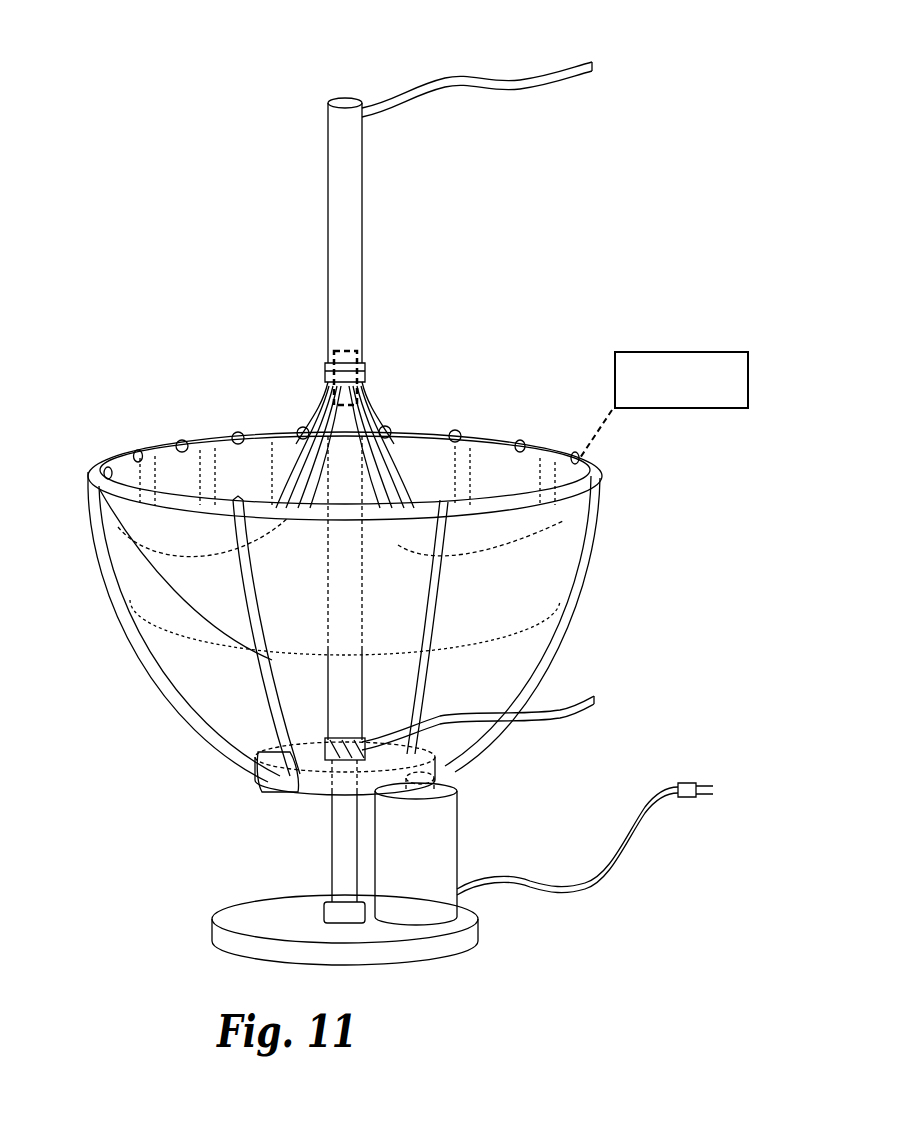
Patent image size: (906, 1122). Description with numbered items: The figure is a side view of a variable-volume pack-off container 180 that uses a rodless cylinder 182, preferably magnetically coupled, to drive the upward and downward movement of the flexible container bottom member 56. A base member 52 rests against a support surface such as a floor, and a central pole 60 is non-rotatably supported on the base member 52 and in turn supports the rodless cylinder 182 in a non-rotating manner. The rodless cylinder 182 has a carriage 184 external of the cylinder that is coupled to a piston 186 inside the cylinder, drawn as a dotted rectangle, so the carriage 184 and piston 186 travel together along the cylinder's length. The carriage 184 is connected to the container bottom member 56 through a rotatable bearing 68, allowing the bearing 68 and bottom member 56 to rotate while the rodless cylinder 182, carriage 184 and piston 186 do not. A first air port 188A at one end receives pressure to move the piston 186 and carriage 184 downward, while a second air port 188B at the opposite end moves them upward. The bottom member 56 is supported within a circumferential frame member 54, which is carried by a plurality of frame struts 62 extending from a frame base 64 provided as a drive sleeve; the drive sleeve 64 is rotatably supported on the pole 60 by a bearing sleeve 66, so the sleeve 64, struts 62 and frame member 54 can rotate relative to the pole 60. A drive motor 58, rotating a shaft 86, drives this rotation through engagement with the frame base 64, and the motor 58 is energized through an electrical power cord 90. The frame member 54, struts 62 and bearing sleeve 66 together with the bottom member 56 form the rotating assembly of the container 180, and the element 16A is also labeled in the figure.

The container 180 is at (178, 178).
The rodless cylinder 182 is at (362, 228).
The first air port 188A is at (390, 102).
The rotatable bearing 68 is at (336, 362).
The carriage 184 is at (366, 378).
The piston 186 is at (330, 378).
The container bottom member 56 is at (380, 478).
The basket rim 16A is at (188, 468).
The circumferential frame member 54 is at (600, 478).
The frame struts 62 is at (124, 648).
The bearing sleeve 66 is at (302, 736).
The second air port 188B is at (365, 744).
The shaft 86 is at (446, 746).
The frame base 64 is at (258, 766).
The central pole 60 is at (336, 831).
The drive motor 58 is at (446, 838).
The electrical power cord 90 is at (618, 862).
The base member 52 is at (480, 940).